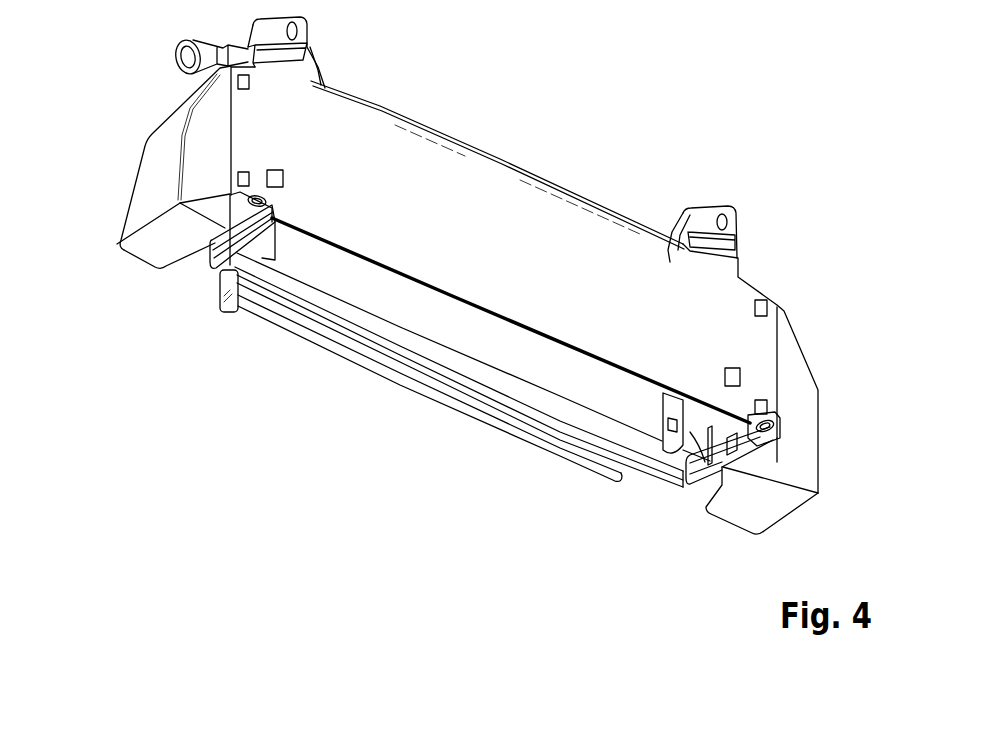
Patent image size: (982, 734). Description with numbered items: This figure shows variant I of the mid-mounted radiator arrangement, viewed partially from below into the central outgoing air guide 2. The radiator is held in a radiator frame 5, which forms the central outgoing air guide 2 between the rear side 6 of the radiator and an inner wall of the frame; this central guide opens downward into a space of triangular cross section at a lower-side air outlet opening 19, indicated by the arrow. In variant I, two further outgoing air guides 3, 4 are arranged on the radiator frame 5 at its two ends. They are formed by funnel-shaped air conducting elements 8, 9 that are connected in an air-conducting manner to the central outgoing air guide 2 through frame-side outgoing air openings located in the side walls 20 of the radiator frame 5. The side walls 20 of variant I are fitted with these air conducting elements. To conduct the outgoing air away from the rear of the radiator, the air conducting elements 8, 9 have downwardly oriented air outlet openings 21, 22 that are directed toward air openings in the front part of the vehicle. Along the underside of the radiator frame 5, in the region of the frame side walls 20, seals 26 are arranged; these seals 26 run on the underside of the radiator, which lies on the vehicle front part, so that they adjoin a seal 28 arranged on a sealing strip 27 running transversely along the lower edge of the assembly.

The variant I is at (807, 284).
The central outgoing air guide 2 is at (437, 323).
The outgoing air guide 3 is at (815, 352).
The outgoing air guide 4 is at (138, 118).
The radiator frame 5 is at (515, 195).
The rear side of the radiator 6 is at (645, 417).
The funnel-shaped air conducting element 8 is at (807, 432).
The funnel-shaped air conducting element 9 is at (150, 178).
The lower-side air outlet opening 19 is at (376, 287).
The side walls of the radiator frame 20 is at (208, 250).
The downwardly oriented air outlet opening 21 is at (148, 258).
The downwardly oriented air outlet opening 22 is at (772, 507).
The seals 26 is at (246, 300).
The sealing strip 27 is at (540, 397).
The seal 28 is at (497, 400).